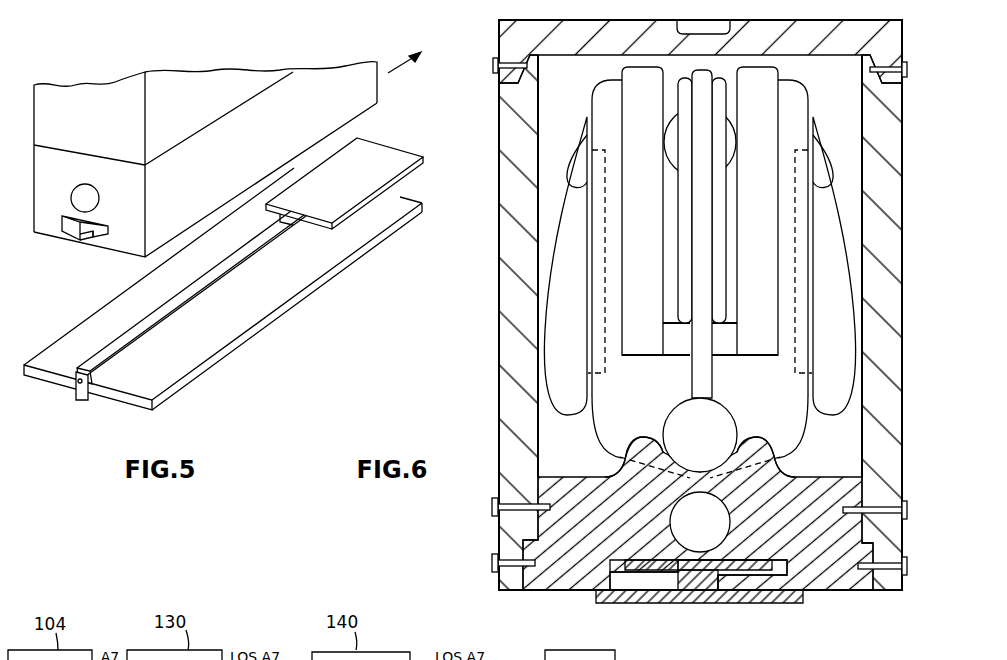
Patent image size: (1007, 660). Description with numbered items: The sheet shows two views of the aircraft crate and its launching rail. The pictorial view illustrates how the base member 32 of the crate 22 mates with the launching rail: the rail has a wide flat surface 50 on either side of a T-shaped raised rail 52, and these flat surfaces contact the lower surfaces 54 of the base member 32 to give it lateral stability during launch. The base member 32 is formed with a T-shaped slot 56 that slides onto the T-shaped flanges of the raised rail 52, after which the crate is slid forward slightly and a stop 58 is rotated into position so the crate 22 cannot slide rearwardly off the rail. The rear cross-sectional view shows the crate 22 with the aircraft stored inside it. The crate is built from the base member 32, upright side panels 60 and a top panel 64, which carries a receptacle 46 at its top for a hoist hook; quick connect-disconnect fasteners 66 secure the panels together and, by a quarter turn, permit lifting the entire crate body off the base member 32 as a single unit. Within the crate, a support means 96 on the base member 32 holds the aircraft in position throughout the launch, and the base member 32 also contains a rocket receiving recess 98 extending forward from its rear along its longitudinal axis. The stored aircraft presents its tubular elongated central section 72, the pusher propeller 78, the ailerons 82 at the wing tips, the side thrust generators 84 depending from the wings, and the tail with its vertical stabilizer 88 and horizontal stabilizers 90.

In FIG. 5, the crate 22 is at (227, 78).
In FIG. 5, the base member 32 is at (127, 240).
In FIG. 6, the base member 32 is at (858, 552).
In FIG. 6, the receptacle 46 is at (710, 22).
In FIG. 5, the flat surface 50 is at (58, 369).
In FIG. 6, the flat surface 50 is at (793, 588).
In FIG. 5, the T-shaped raised rail 52 is at (397, 157).
In FIG. 6, the T-shaped raised rail 52 is at (662, 565).
In FIG. 5, the lower surface 54 is at (107, 252).
In FIG. 6, the lower surface 54 is at (833, 597).
In FIG. 5, the T-shaped slot 56 is at (82, 244).
In FIG. 5, the stop 58 is at (80, 401).
In FIG. 6, the upright side panel 60 is at (499, 280).
In FIG. 6, the top panel 64 is at (700, 41).
In FIG. 6, the quick connect-disconnect fastener 66 is at (907, 70).
In FIG. 6, the elongated central section 72 is at (733, 413).
In FIG. 6, the pusher propeller 78 is at (682, 313).
In FIG. 6, the aileron 82 is at (822, 160).
In FIG. 6, the side thrust generator 84 is at (812, 135).
In FIG. 6, the vertical stabilizer 88 is at (690, 73).
In FIG. 6, the horizontal stabilizer 90 is at (626, 86).
In FIG. 6, the support means 96 is at (615, 457).
In FIG. 6, the rocket receiving recess 98 is at (607, 578).